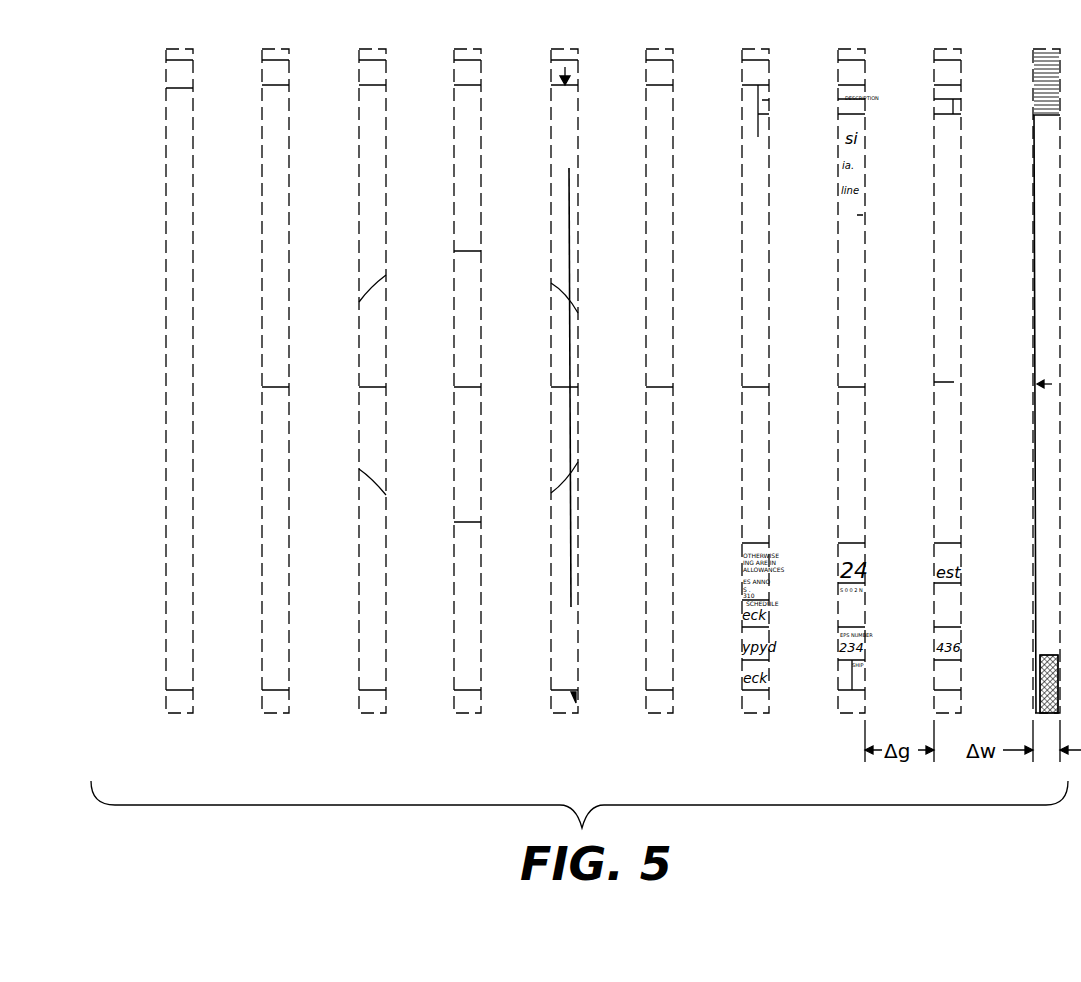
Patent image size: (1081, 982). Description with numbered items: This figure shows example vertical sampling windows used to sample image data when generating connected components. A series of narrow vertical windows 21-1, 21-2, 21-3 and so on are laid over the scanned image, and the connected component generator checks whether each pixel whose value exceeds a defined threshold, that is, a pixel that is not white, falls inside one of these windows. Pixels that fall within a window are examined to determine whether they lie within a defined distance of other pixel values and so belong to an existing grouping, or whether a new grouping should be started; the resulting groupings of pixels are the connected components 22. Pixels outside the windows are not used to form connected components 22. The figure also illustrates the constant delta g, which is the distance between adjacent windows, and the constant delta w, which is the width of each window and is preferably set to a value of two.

The vertical window 21-1 is at (177, 722).
The vertical window 21-2 is at (273, 722).
The vertical window 21-3 is at (371, 722).
The connected component 22 is at (180, 90).